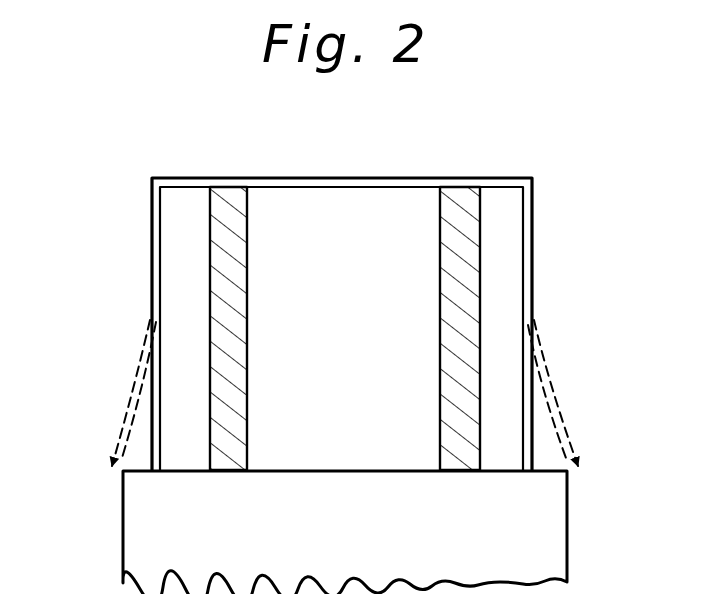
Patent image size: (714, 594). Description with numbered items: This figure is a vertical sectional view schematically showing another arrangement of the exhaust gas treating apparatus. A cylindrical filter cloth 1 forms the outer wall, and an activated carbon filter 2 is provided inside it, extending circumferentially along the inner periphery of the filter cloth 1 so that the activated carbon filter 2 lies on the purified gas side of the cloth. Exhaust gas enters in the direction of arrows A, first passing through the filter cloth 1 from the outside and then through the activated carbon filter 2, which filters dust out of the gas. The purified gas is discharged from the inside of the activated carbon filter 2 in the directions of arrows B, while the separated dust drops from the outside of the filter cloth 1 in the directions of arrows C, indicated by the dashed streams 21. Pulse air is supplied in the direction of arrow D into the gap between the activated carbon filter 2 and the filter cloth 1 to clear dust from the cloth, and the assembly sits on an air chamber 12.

The filter cloth 1 is at (152, 213).
The activated carbon filter 2 is at (214, 222).
The air chamber 12 is at (540, 527).
The side stream 21 is at (130, 364).
The arrows A is at (146, 315).
The arrows B is at (273, 314).
The arrows C is at (344, 488).
The arrow D is at (503, 219).